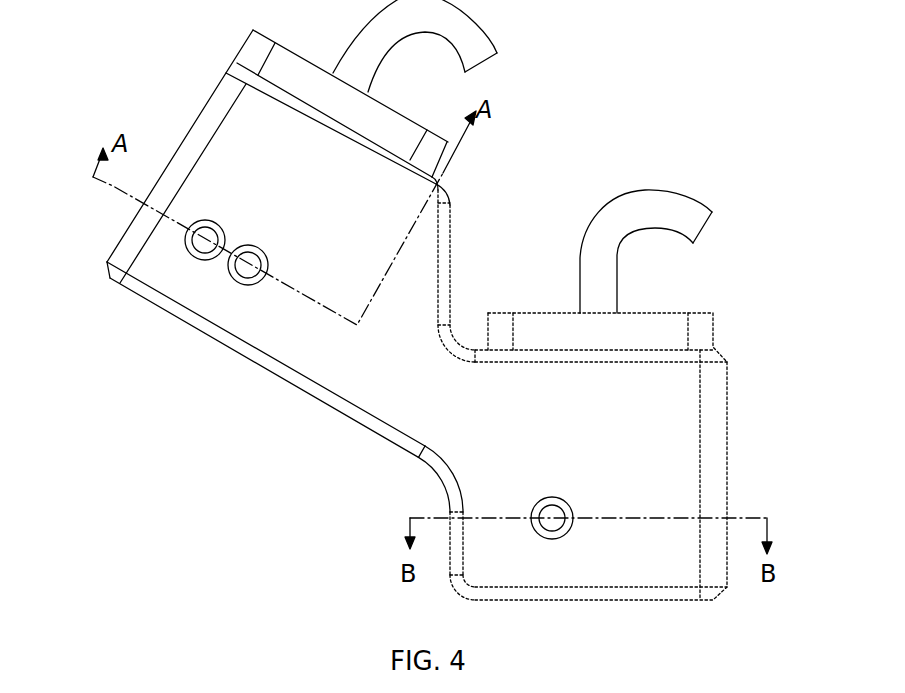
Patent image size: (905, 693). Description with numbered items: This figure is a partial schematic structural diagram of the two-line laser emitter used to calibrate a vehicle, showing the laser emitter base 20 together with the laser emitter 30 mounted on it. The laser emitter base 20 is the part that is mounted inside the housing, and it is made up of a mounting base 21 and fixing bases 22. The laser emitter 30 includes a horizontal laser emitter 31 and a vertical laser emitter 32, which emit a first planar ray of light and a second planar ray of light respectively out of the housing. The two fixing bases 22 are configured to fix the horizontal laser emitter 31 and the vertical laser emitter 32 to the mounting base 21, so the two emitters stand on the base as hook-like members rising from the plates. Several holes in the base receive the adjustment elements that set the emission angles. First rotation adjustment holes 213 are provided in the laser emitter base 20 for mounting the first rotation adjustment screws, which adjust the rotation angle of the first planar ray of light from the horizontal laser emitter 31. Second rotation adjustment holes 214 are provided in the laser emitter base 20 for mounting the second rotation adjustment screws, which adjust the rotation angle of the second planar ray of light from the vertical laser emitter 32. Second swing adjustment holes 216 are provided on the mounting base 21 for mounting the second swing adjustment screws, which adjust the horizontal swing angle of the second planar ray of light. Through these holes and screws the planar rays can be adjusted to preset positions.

The laser emitter base 20 is at (363, 518).
The mounting base 21 is at (318, 340).
The fixing base 22 is at (598, 328).
The first rotation adjustment hole 213 is at (557, 497).
The second rotation adjustment hole 214 is at (187, 243).
The second swing adjustment hole 216 is at (233, 270).
The laser emitter 30 is at (604, 17).
The horizontal laser emitter 31 is at (595, 255).
The vertical laser emitter 32 is at (470, 44).